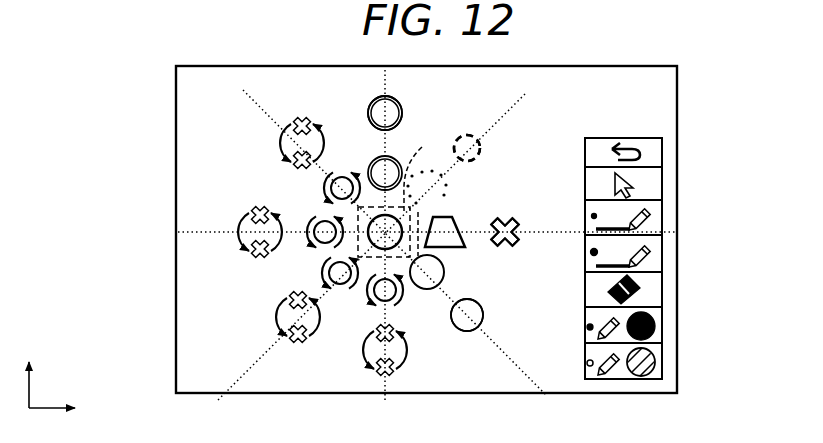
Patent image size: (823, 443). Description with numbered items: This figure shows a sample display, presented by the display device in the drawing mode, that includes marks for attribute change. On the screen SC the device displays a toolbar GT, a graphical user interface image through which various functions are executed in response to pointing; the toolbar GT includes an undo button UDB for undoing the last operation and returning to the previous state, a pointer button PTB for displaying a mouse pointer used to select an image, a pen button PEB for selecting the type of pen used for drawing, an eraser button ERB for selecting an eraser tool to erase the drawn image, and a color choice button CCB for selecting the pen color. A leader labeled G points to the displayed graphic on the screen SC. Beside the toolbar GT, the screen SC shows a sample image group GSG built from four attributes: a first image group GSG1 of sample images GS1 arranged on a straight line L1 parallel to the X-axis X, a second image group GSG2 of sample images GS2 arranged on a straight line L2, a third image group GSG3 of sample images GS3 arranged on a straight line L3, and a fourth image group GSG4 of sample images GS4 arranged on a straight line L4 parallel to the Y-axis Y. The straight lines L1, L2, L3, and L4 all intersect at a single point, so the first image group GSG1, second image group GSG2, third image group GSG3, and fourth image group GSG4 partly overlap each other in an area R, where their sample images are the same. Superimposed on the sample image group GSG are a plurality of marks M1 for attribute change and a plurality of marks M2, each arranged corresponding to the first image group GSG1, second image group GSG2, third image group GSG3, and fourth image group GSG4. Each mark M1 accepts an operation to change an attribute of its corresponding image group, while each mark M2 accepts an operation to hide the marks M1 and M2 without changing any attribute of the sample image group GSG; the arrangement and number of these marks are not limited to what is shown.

The screen SC is at (663, 105).
The graphic G is at (680, 116).
The toolbar GT is at (623, 133).
The sample image group GSG is at (448, 128).
The first image group GSG1 is at (514, 222).
The second image group GSG2 is at (486, 148).
The third image group GSG3 is at (488, 318).
The fourth image group GSG4 is at (373, 101).
The sample image GS1 is at (516, 245).
The sample image GS2 is at (482, 158).
The sample image GS3 is at (485, 313).
The sample image GS4 is at (396, 104).
The area R is at (426, 193).
The mark for attribute change M1 is at (345, 170).
The mark M2 is at (284, 136).
The straight line L1 is at (401, 233).
The straight line L2 is at (360, 258).
The straight line L3 is at (410, 257).
The straight line L4 is at (385, 247).
The undo button UDB is at (663, 150).
The pointer button PTB is at (663, 185).
The pen button PEB is at (663, 250).
The eraser button ERB is at (663, 292).
The color choice button CCB is at (663, 326).
The X-axis X is at (65, 408).
The Y-axis Y is at (28, 370).